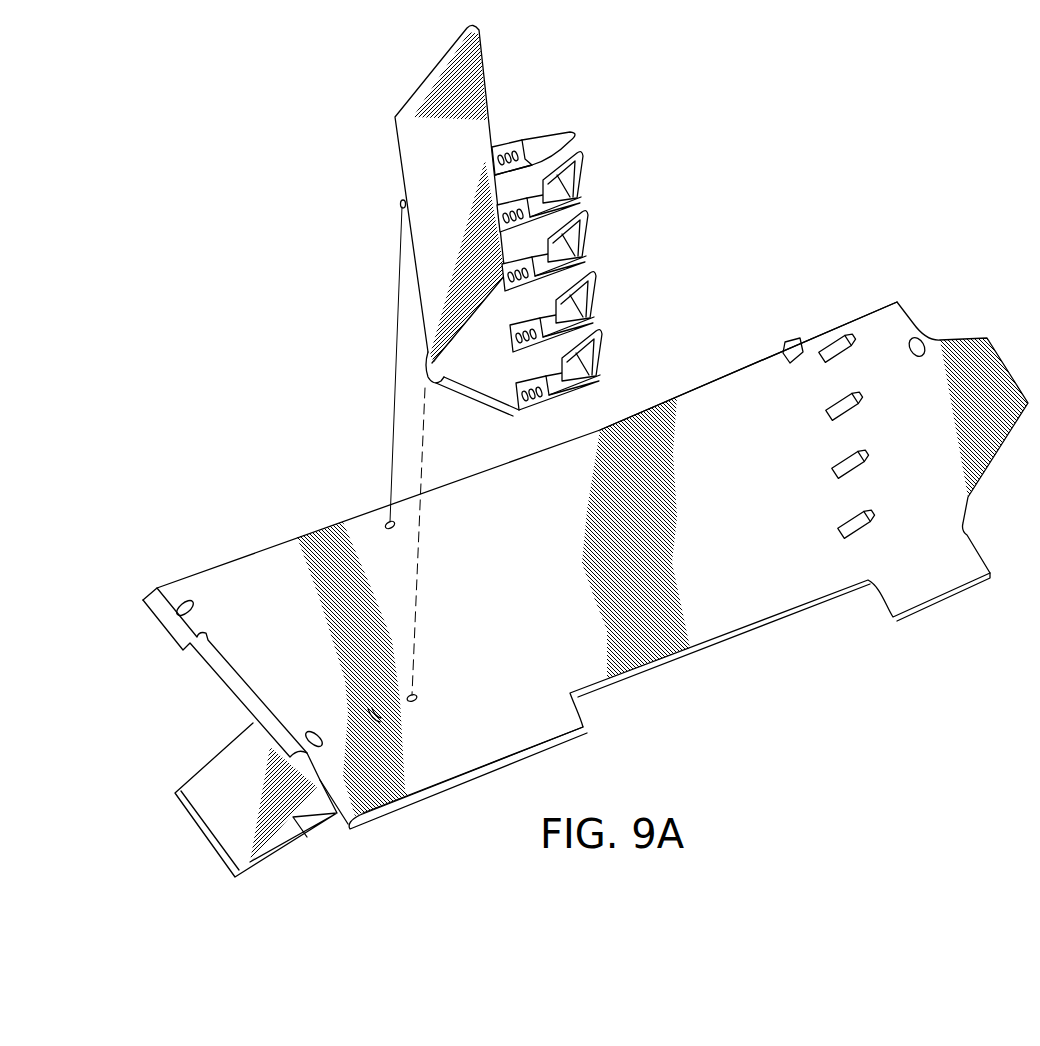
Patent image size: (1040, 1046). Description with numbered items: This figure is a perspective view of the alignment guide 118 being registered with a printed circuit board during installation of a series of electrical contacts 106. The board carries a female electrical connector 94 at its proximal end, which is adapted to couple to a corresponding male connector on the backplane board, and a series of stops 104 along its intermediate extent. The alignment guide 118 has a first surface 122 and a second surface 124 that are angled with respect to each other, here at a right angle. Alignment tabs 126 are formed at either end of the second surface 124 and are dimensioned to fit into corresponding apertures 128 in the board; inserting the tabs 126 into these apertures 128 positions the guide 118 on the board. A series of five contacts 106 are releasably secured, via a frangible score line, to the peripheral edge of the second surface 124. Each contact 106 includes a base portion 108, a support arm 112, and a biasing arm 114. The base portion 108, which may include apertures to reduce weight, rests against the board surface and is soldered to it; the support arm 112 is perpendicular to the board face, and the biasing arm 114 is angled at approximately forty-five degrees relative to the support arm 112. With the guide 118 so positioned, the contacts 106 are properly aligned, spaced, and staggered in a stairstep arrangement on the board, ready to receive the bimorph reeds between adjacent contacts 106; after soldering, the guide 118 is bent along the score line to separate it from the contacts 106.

The female electrical connector 94 is at (213, 770).
The stops 104 is at (827, 337).
The electrical contacts 106 is at (574, 123).
The base portion 108 is at (500, 212).
The support arm 112 is at (567, 392).
The biasing arm 114 is at (597, 358).
The alignment guide 118 is at (348, 106).
The first surface 122 is at (417, 149).
The second surface 124 is at (478, 393).
The alignment tabs 126 is at (403, 203).
The apertures 128 is at (388, 527).